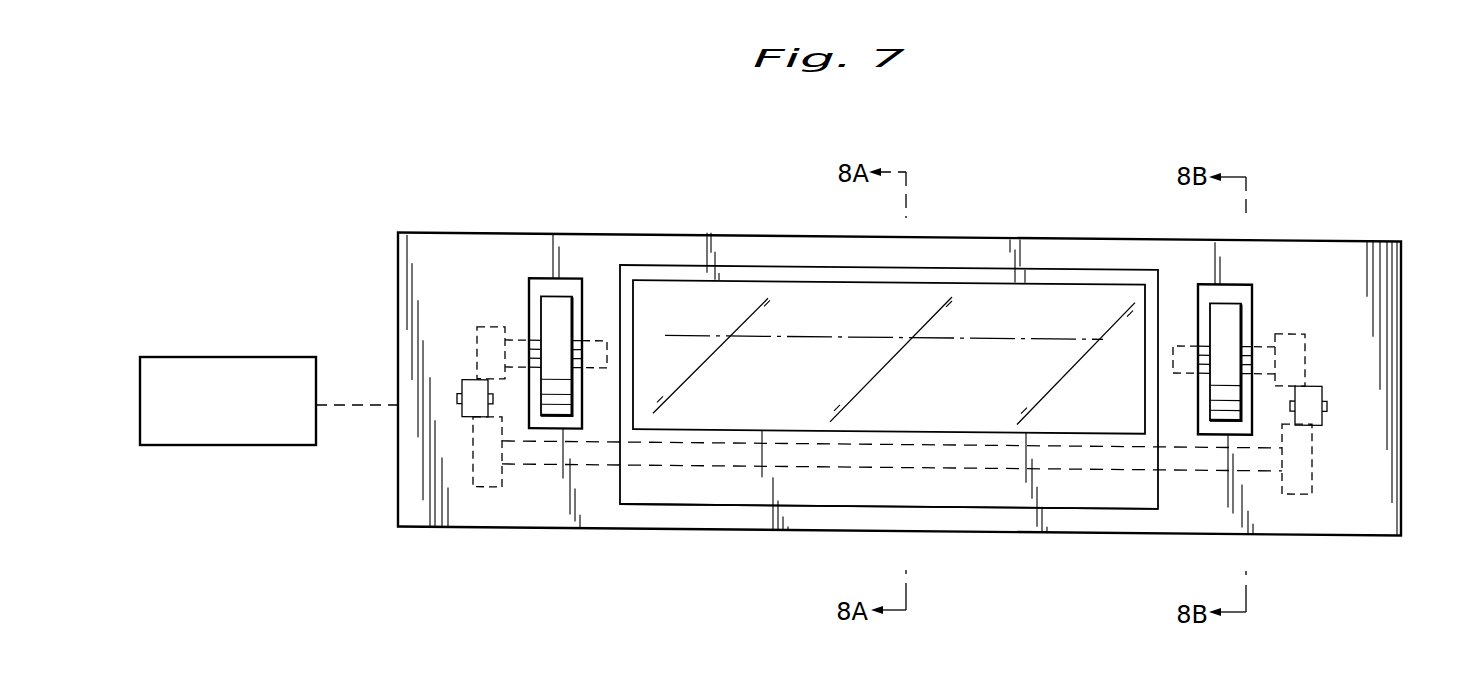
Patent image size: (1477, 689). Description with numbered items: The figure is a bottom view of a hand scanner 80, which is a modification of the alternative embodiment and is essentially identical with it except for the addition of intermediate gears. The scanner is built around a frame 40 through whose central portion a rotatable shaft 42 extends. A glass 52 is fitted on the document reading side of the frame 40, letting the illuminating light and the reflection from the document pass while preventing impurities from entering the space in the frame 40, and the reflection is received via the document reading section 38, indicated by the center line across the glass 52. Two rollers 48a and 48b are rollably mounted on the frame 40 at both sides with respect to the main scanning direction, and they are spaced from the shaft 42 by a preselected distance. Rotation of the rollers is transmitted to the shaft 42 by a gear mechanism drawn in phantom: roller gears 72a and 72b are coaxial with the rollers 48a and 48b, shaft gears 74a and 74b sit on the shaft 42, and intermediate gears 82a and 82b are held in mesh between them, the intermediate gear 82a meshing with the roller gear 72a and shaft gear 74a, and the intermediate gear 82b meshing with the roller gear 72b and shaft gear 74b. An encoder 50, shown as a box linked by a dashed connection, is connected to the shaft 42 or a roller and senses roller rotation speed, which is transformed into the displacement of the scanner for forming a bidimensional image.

The hand scanner 80 is at (1363, 217).
The encoder 50 is at (226, 357).
The frame 40 is at (955, 270).
The rotatable shaft 42 is at (680, 462).
The glass 52 is at (1058, 310).
The document reading section 38 is at (785, 335).
The roller 48a is at (558, 313).
The roller 48b is at (1230, 320).
The roller gear 72a is at (490, 326).
The roller gear 72b is at (1300, 347).
The intermediate gear 82a is at (462, 408).
The intermediate gear 82b is at (1312, 392).
The shaft gear 74a is at (485, 487).
The shaft gear 74b is at (1307, 455).